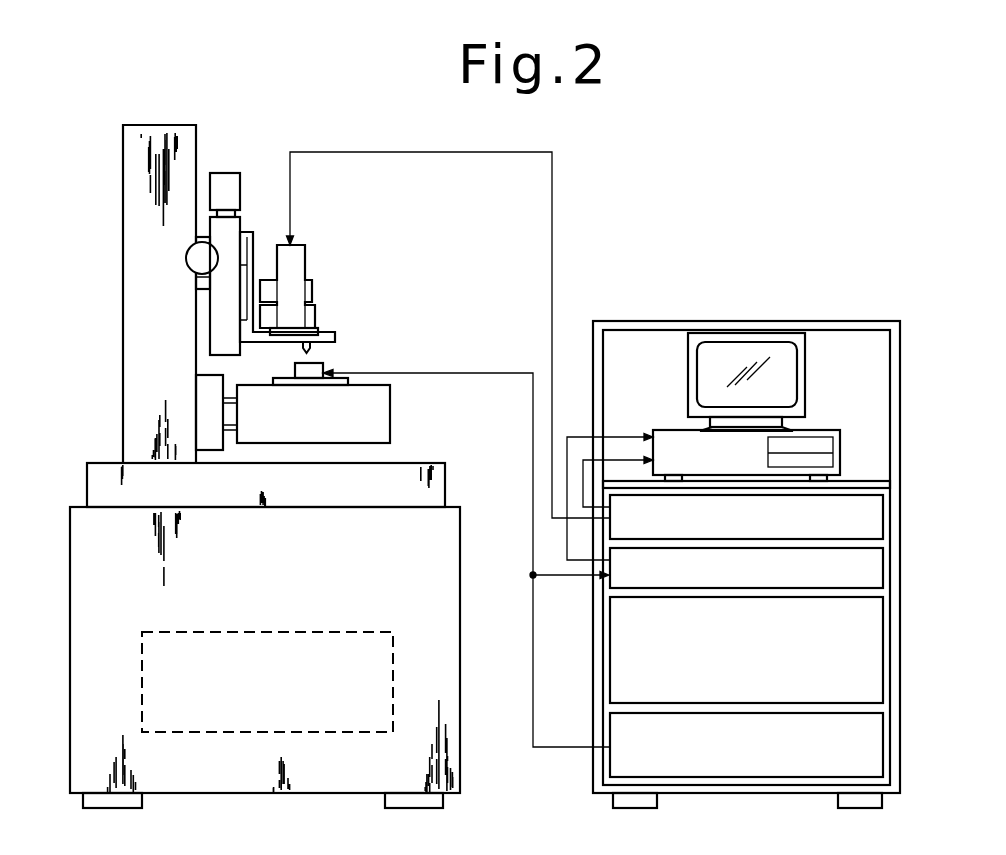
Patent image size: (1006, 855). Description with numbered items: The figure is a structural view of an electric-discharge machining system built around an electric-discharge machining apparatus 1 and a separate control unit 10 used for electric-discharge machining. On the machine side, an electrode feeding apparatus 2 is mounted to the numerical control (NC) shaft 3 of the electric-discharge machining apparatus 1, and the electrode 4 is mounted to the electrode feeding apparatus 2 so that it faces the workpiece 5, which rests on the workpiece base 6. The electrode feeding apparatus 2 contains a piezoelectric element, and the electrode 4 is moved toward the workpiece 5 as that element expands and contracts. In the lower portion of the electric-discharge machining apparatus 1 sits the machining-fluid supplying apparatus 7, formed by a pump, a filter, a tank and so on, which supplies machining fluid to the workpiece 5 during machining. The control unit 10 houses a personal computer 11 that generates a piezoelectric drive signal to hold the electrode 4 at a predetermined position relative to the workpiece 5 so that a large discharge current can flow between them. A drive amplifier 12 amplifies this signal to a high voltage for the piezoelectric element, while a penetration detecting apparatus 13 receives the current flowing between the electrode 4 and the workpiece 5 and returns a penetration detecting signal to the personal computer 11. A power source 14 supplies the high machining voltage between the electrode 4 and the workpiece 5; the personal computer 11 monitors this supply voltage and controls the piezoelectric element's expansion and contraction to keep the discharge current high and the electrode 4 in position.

The electric-discharge machining apparatus 1 is at (116, 187).
The electrode feeding apparatus 2 is at (293, 267).
The numerical control (NC) shaft 3 is at (228, 228).
The electrode 4 is at (312, 351).
The workpiece 5 is at (323, 363).
The workpiece base 6 is at (390, 420).
The machining-fluid supplying apparatus 7 is at (305, 732).
The control unit 10 is at (822, 307).
The personal computer 11 is at (843, 450).
The drive amplifier 12 is at (873, 525).
The penetration detecting apparatus 13 is at (873, 570).
The power source 14 is at (873, 752).